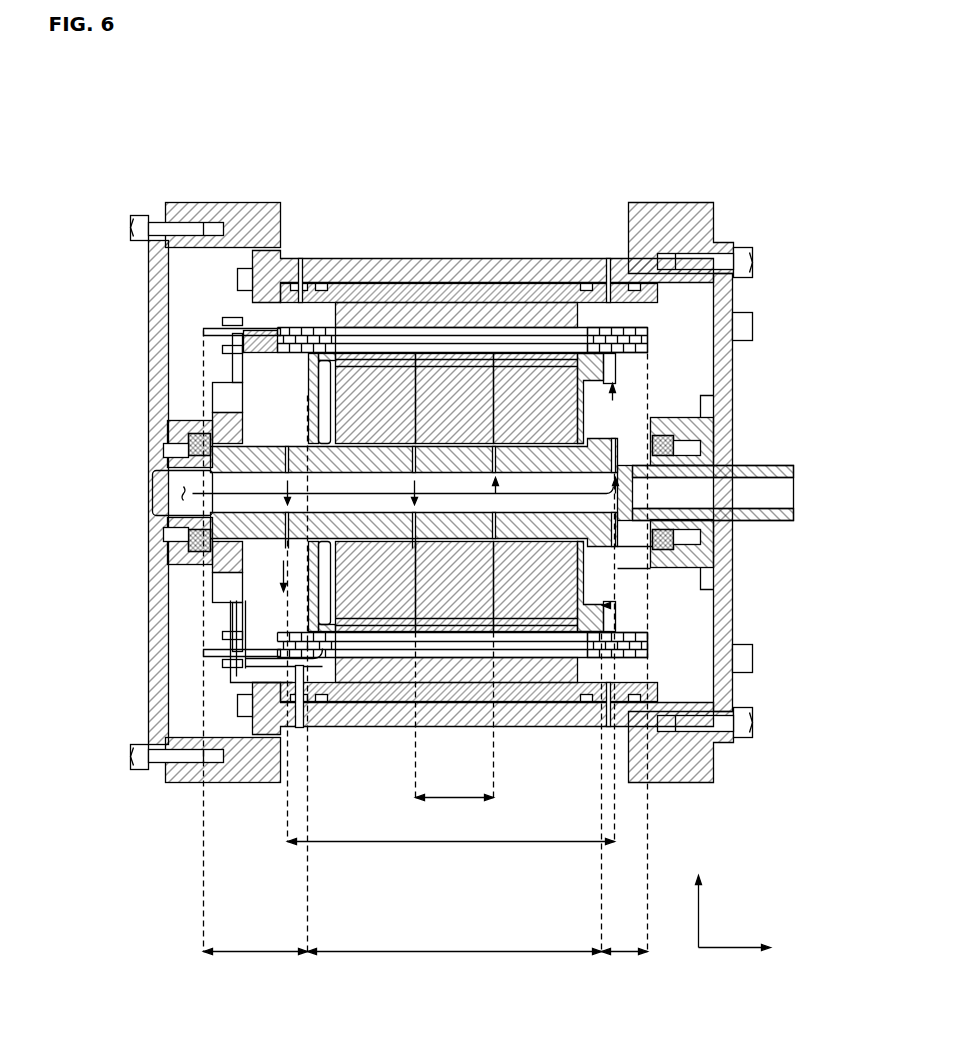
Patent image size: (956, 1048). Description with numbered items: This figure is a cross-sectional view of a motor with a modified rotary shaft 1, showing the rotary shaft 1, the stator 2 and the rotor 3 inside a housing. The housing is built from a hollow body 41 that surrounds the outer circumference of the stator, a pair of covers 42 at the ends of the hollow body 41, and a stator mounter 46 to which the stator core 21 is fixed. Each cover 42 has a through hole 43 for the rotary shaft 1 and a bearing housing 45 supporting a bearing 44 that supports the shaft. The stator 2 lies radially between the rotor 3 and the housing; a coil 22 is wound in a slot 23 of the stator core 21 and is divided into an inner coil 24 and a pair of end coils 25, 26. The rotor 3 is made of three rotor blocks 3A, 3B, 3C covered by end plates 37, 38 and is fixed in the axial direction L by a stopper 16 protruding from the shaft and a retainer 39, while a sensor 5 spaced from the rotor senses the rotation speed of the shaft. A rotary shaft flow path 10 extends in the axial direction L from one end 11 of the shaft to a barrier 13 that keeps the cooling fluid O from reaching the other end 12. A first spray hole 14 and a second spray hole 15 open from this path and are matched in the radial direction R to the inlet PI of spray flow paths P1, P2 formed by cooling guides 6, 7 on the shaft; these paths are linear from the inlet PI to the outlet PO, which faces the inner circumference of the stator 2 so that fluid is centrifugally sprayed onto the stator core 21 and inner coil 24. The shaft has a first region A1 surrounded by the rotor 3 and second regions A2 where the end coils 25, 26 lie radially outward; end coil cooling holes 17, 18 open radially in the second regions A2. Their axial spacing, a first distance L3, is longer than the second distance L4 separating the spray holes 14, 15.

The rotary shaft 1 is at (771, 516).
The stator 2 is at (422, 144).
The rotor 3 is at (566, 562).
The rotor block 3A is at (370, 600).
The rotor block 3B is at (453, 600).
The rotor block 3C is at (533, 600).
The sensor 5 is at (222, 407).
The cooling guide 6 is at (327, 400).
The cooling guide 7 is at (583, 598).
The rotary shaft flow path 10 is at (168, 493).
The one end of the rotary shaft 11 is at (157, 485).
The other end of the rotary shaft 12 is at (794, 490).
The barrier 13 is at (628, 497).
The first spray hole 14 is at (413, 567).
The second spray hole 15 is at (655, 415).
The stopper 16 is at (540, 582).
The end coil cooling hole 17 is at (290, 527).
The end coil cooling hole 18 is at (715, 396).
The stator core 21 is at (412, 302).
The coil 22 is at (377, 178).
The slot 23 is at (507, 327).
The inner coil 24 is at (372, 340).
The end coil 25 is at (297, 335).
The end coil 26 is at (644, 338).
The end plate 37 is at (260, 660).
The end plate 38 is at (612, 606).
The retainer 39 is at (308, 620).
The hollow body 41 is at (241, 206).
The cover 42 is at (156, 339).
The through hole 43 is at (160, 453).
The bearing 44 is at (188, 437).
The bearing housing 45 is at (200, 427).
The stator mounter 46 is at (296, 690).
The cooling fluid O is at (155, 472).
The inlet PI is at (457, 444).
The outlet PO is at (497, 456).
The spray flow path P1 is at (280, 576).
The spray flow path P2 is at (526, 455).
The first distance L3 is at (451, 853).
The second distance L4 is at (455, 808).
The first region A1 is at (455, 963).
The second region A2 is at (426, 963).
The radial direction R is at (699, 899).
The axial direction L is at (744, 948).